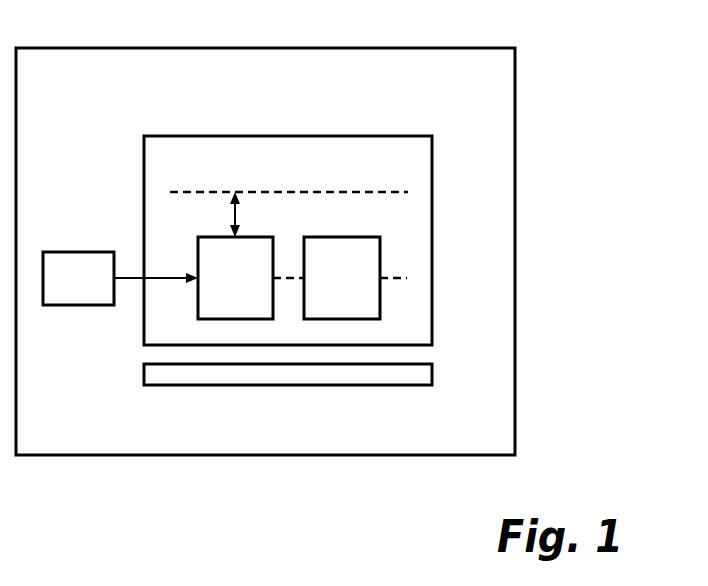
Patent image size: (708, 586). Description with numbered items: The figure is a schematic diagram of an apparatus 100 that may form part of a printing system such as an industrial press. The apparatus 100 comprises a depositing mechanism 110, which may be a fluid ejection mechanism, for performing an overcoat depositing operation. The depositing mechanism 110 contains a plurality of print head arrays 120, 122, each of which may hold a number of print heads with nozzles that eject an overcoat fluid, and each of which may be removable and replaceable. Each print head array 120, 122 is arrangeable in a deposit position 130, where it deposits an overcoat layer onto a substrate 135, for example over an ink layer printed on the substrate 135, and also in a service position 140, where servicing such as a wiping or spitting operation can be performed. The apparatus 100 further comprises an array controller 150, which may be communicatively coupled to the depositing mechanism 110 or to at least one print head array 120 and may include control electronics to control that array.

The apparatus 100 is at (32, 440).
The depositing mechanism 110 is at (203, 134).
The print head array 120 is at (215, 292).
The print head array 122 is at (321, 292).
The deposit position 130 is at (407, 278).
The substrate 135 is at (412, 362).
The service position 140 is at (408, 192).
The array controller 150 is at (58, 292).